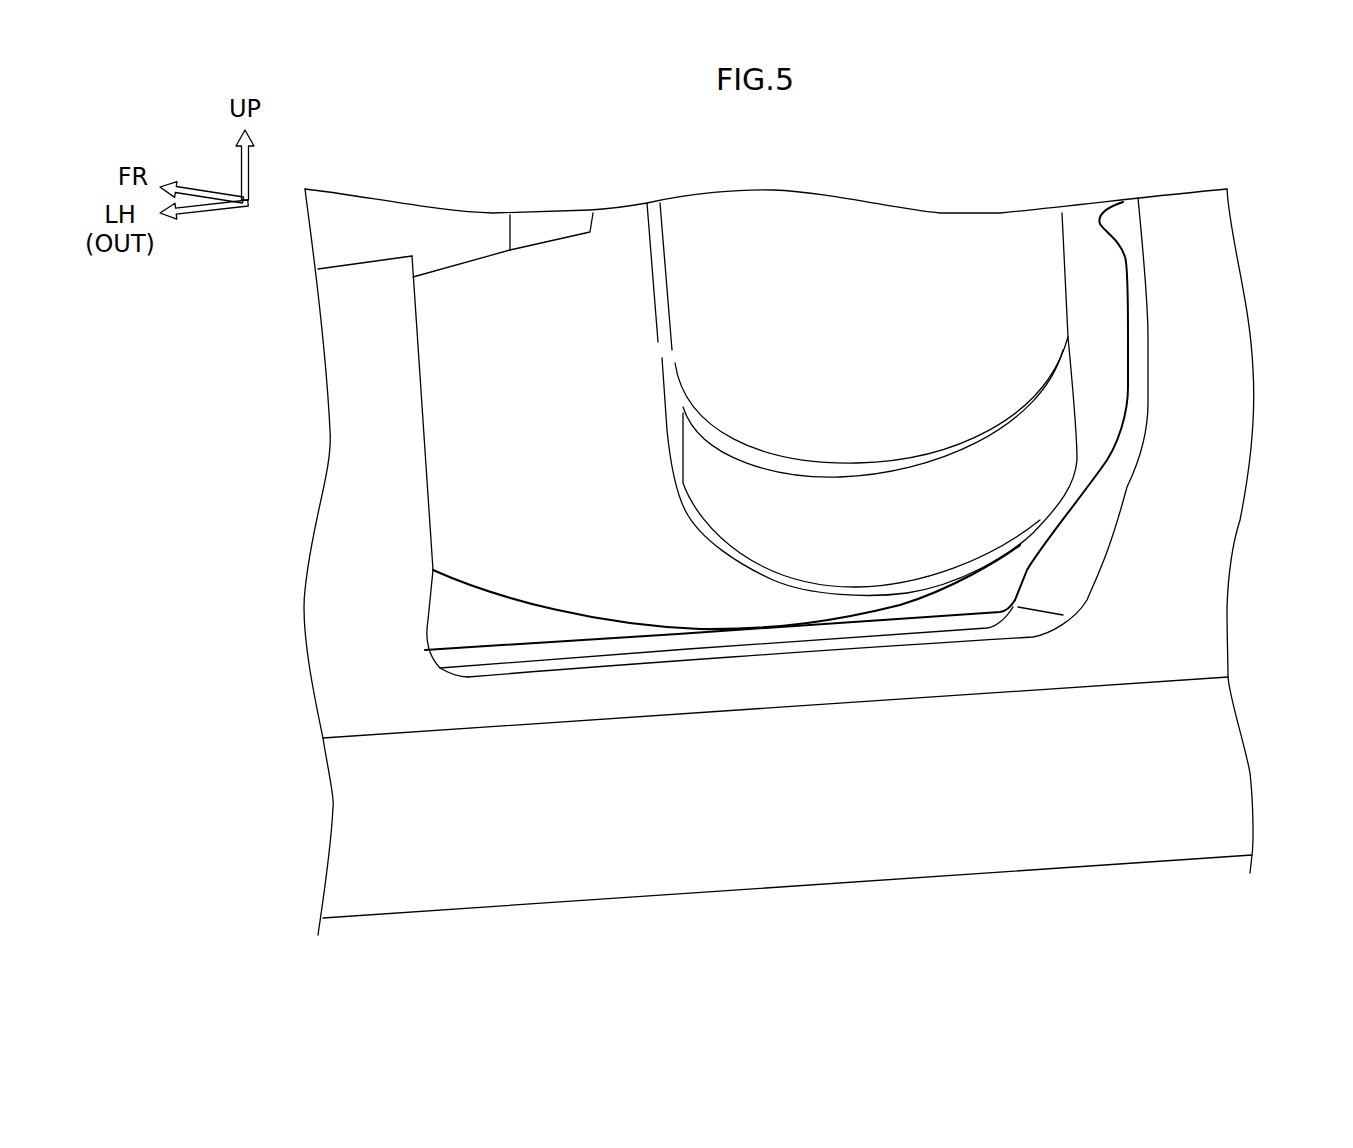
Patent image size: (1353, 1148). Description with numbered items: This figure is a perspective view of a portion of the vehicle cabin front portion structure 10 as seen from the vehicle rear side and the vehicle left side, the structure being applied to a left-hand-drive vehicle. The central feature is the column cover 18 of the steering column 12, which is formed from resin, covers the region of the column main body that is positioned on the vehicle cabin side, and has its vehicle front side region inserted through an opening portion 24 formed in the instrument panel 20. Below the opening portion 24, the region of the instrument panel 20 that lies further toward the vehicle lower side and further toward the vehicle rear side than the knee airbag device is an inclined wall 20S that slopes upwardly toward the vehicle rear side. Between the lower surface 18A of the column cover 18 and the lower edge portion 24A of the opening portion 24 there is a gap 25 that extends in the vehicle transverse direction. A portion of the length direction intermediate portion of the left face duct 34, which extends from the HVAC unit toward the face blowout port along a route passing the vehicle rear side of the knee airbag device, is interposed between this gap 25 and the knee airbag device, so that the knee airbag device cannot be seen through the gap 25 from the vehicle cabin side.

The vehicle cabin front portion structure 10 is at (814, 534).
The steering column 12 is at (779, 534).
The column cover 18 is at (503, 312).
The lower surface 18A is at (767, 613).
The instrument panel 20 is at (1193, 518).
The inclined wall 20S is at (947, 817).
The opening portion 24 is at (420, 448).
The lower edge portion 24A is at (628, 657).
The gap 25 is at (947, 603).
The left face duct 34 is at (518, 650).